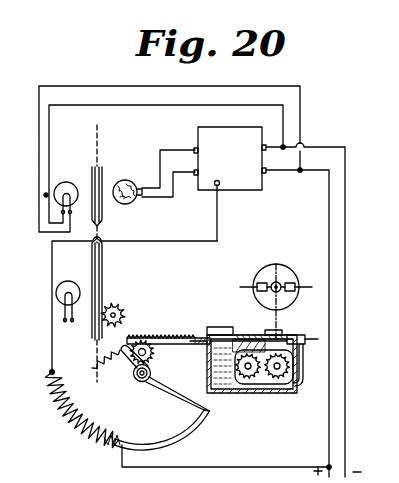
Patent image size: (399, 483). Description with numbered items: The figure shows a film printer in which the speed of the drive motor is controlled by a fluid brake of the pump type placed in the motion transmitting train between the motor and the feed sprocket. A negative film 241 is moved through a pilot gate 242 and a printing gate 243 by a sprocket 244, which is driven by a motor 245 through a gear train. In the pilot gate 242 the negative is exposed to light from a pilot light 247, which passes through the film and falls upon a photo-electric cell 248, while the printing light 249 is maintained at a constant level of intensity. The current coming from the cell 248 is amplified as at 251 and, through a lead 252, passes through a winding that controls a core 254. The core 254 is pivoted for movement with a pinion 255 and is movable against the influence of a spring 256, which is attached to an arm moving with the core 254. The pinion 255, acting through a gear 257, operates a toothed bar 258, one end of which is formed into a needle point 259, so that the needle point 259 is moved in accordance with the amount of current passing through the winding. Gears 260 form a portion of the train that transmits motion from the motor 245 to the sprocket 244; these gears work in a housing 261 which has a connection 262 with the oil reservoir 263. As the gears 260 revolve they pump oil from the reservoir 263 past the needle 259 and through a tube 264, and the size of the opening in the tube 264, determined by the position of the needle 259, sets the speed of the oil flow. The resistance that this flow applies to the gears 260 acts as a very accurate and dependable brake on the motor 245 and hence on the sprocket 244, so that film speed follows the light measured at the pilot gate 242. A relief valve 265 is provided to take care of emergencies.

The negative film 241 is at (104, 138).
The pilot gate 242 is at (104, 163).
The printing gate 243 is at (94, 333).
The sprocket 244 is at (118, 308).
The motor 245 is at (282, 268).
The pilot light 247 is at (75, 183).
The photo-electric cell 248 is at (142, 168).
The printing light 249 is at (57, 290).
The amplifier 251 is at (222, 128).
The lead 252 is at (220, 212).
The core 254 is at (176, 440).
The pinion 255 is at (178, 393).
The spring 256 is at (138, 380).
The gear 257 is at (150, 358).
The toothed bar 258 is at (152, 338).
The needle point 259 is at (211, 328).
The gears 260 is at (268, 394).
The housing 261 is at (303, 353).
The connection 262 is at (282, 390).
The oil reservoir 263 is at (232, 394).
The tube 264 is at (254, 337).
The relief valve 265 is at (303, 336).